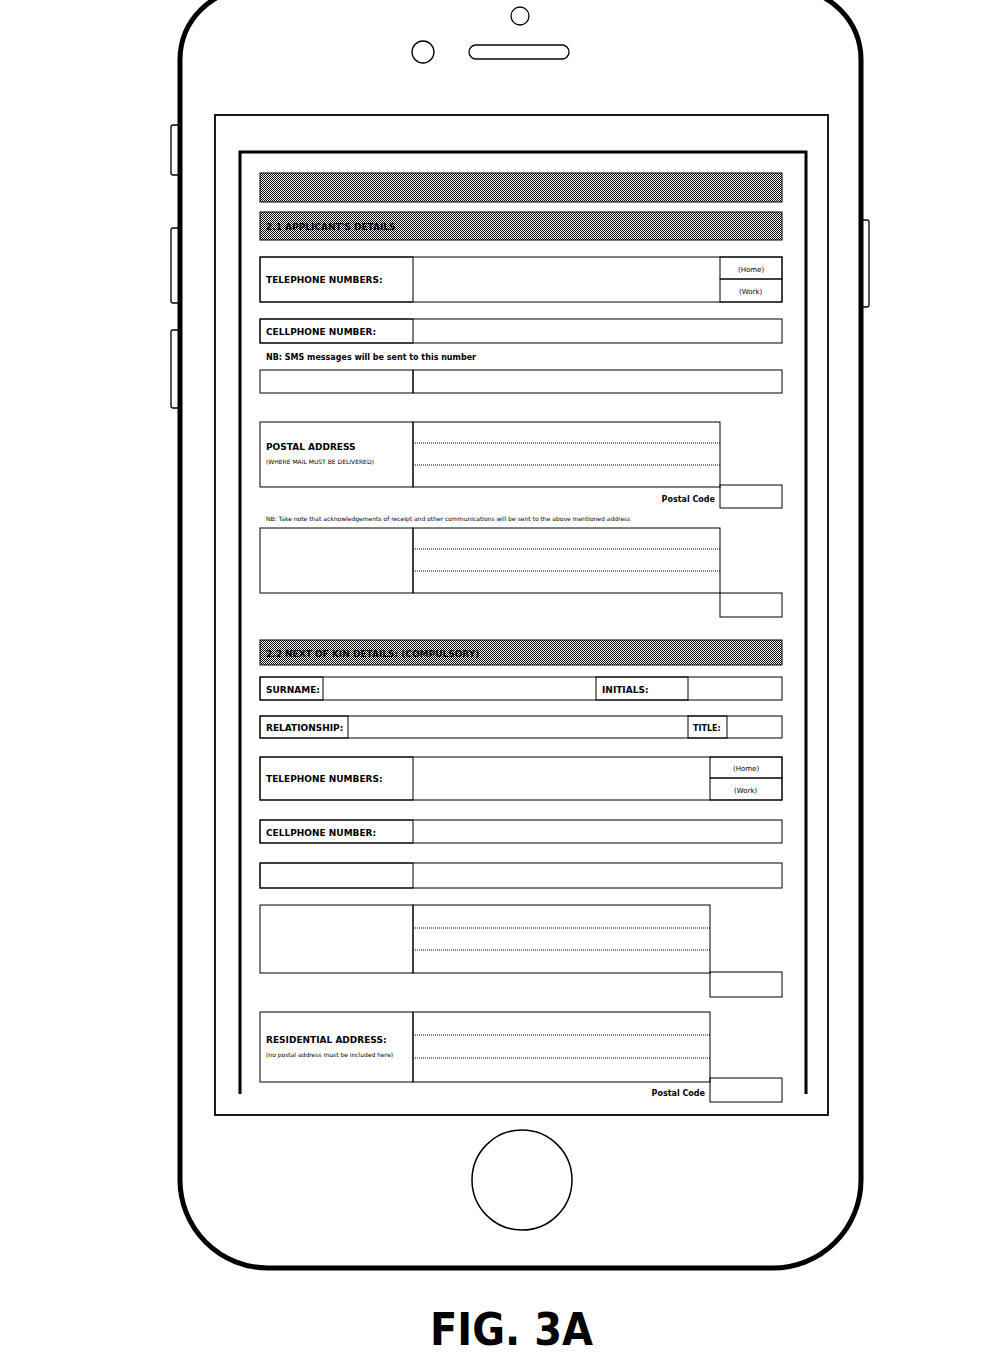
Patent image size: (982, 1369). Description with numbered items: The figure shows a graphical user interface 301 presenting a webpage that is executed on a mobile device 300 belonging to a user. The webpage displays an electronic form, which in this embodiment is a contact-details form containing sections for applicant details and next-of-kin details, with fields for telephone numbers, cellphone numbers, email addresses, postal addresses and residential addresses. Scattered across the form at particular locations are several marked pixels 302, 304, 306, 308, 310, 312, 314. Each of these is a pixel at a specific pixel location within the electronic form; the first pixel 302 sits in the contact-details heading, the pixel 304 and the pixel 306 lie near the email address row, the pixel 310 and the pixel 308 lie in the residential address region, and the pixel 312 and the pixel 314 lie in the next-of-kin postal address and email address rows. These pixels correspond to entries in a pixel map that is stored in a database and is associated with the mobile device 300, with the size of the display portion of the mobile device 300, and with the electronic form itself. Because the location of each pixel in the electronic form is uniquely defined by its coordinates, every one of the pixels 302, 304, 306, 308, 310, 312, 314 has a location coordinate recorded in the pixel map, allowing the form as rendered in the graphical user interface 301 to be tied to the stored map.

The mobile device 300 is at (200, 76).
The graphical user interface 301 is at (215, 205).
The pixel 302 is at (521, 168).
The pixel 304 is at (325, 385).
The pixel 306 is at (597, 396).
The pixel 308 is at (597, 572).
The pixel 310 is at (336, 563).
The pixel 312 is at (521, 951).
The pixel 314 is at (521, 847).